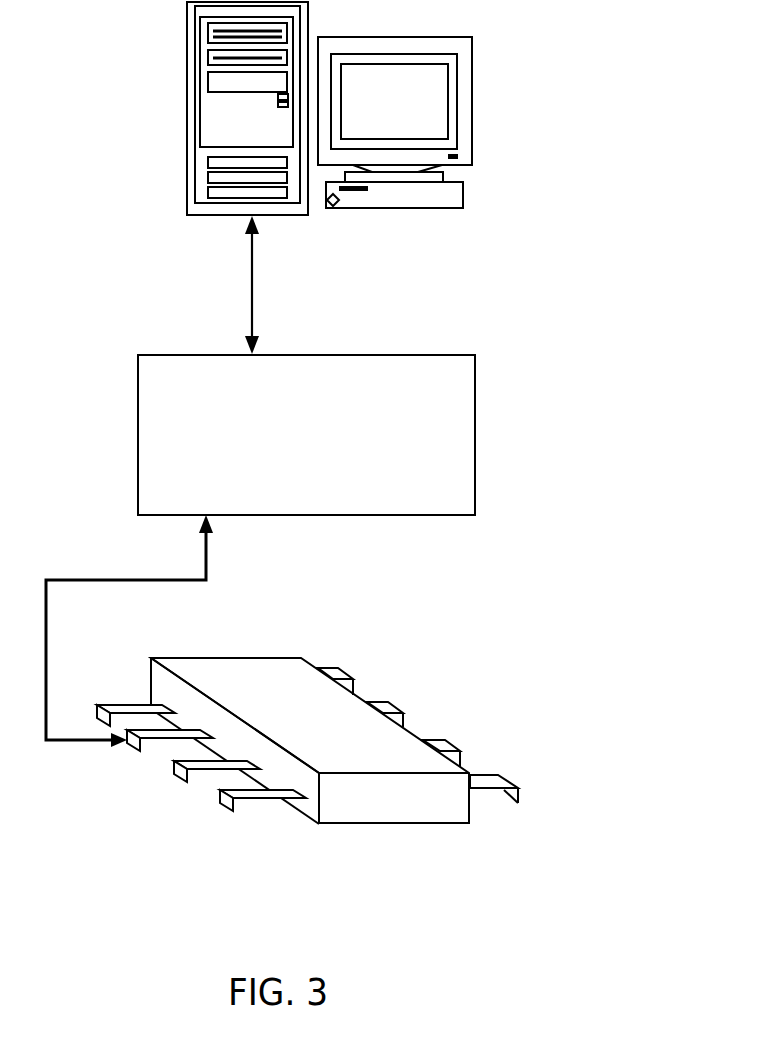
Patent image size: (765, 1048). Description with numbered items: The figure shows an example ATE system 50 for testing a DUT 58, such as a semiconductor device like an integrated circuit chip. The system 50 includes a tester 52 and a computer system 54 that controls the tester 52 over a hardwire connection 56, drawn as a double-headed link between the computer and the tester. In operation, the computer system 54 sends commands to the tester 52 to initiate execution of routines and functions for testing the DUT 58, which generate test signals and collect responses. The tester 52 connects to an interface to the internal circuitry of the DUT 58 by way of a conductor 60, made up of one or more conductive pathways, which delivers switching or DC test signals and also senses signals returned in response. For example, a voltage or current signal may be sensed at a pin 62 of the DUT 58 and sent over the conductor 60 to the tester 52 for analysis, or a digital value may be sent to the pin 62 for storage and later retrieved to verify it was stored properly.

The ATE system 50 is at (633, 248).
The tester 52 is at (432, 354).
The computer system 54 is at (187, 64).
The hardwire connection 56 is at (253, 270).
The DUT 58 is at (283, 658).
The conductor 60 is at (207, 547).
The pin 62 is at (137, 748).